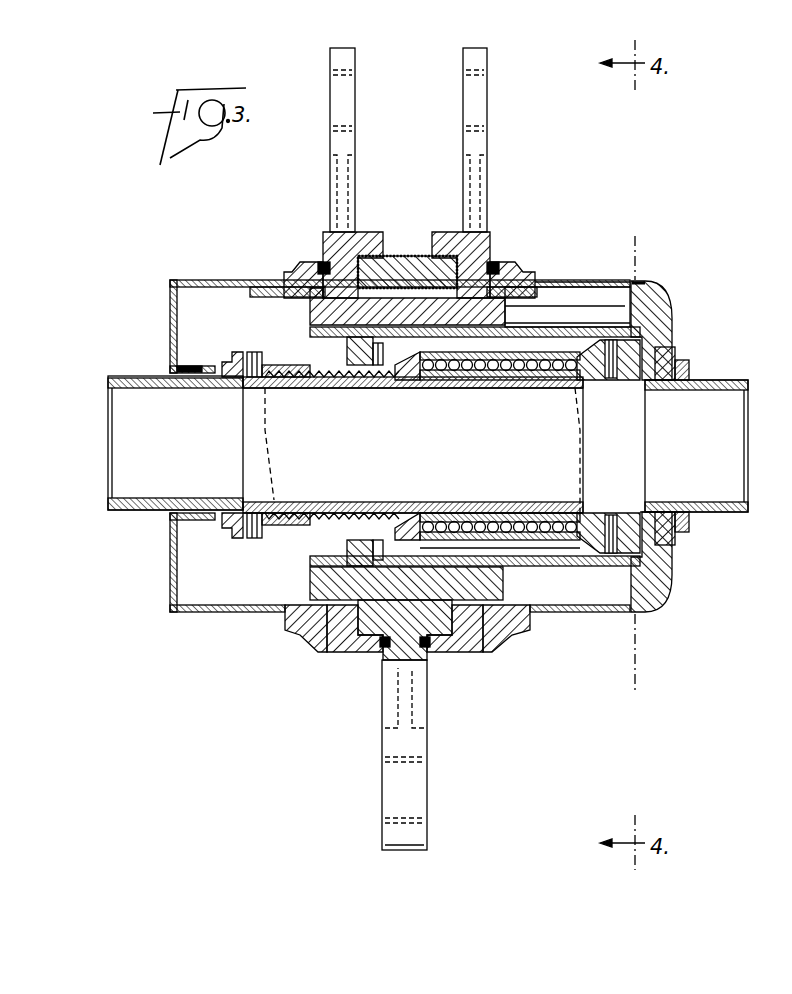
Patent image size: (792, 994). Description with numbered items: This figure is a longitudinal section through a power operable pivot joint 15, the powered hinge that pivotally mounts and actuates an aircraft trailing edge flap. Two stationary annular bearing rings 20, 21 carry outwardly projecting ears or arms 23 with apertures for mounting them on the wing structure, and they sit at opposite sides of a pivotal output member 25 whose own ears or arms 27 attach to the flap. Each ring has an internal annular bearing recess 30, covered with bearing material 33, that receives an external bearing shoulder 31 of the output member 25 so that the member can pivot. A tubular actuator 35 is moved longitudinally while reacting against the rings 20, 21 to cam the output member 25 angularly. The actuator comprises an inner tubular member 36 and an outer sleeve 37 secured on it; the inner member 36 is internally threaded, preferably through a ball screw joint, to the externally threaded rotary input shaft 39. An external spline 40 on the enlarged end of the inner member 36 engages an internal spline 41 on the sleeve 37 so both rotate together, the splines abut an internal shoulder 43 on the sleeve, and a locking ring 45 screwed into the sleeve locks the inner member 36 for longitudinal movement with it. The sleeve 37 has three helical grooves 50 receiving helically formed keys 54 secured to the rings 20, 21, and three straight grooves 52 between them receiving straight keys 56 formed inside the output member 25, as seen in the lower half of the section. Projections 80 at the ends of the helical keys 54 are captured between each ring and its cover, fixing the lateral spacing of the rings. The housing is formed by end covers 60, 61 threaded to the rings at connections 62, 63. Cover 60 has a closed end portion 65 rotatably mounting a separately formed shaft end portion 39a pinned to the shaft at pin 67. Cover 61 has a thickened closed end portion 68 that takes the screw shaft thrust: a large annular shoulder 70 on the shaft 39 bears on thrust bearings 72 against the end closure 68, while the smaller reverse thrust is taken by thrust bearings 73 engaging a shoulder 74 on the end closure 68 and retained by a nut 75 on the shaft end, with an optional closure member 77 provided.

The power operable pivot joint 15 is at (664, 252).
The annular bearing ring 20 is at (326, 245).
The annular bearing ring 21 is at (505, 236).
The ears or arms 23 is at (480, 57).
The pivotal output member 25 is at (425, 662).
The ears or arms 27 is at (427, 835).
The internal annular bearing recess 30 is at (400, 258).
The external bearing shoulder 31 is at (345, 652).
The bearing material 33 is at (490, 256).
The actuator 35 is at (650, 283).
The inner tubular member 36 is at (402, 535).
The outer sleeve 37 is at (495, 548).
The rotary input shaft 39 is at (318, 518).
The shaft end portion 39a is at (160, 508).
The external spline 40 is at (370, 542).
The internal spline 41 is at (384, 357).
The internal shoulder 43 is at (440, 535).
The locking ring 45 is at (352, 357).
The helical grooves 50 is at (556, 306).
The straight grooves 52 is at (600, 568).
The helically formed key 54 is at (312, 296).
The straight key 56 is at (312, 580).
The end cover 60 is at (205, 282).
The end cover 61 is at (600, 287).
The threaded connection 62 is at (285, 275).
The threaded connection 63 is at (565, 280).
The closed end portion 65 is at (170, 322).
The pin 67 is at (256, 352).
The closed end portion 68 is at (665, 315).
The annular shoulder 70 is at (600, 380).
The thrust bearings 72 is at (614, 370).
The thrust bearings 73 is at (640, 512).
The shoulder 74 is at (614, 520).
The nut 75 is at (670, 513).
The closure member 77 is at (686, 380).
The projections 80 is at (320, 262).